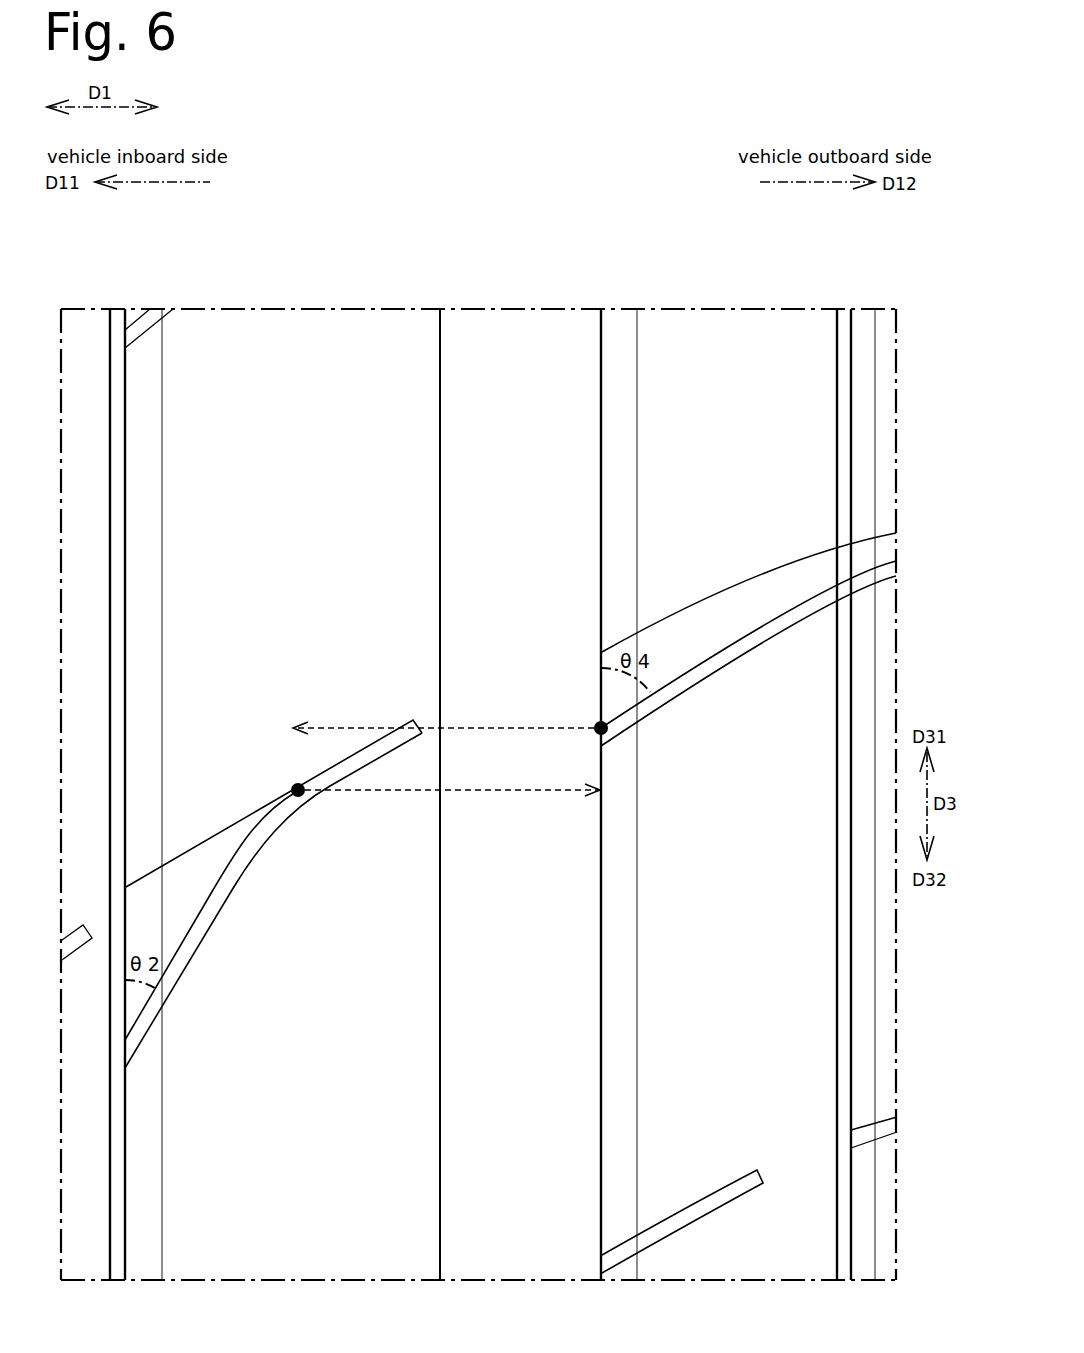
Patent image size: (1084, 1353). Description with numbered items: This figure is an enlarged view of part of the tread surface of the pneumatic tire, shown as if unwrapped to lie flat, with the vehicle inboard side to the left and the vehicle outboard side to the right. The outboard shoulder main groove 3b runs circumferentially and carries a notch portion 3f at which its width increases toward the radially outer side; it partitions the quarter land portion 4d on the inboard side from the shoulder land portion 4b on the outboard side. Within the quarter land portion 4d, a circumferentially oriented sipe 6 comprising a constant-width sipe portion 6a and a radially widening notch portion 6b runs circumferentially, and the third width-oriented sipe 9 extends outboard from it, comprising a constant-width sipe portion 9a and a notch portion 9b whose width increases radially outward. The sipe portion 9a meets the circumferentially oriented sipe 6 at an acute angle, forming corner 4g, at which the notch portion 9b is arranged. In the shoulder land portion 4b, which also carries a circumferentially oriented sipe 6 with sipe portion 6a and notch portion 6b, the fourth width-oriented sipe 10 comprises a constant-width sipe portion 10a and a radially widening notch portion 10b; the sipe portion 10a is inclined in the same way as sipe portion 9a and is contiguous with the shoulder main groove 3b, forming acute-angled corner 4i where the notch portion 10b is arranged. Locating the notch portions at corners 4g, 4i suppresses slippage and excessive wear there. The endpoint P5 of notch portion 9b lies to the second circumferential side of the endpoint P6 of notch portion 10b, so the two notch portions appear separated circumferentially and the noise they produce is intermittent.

The shoulder main groove 3b is at (527, 330).
The notch portion 3f is at (615, 385).
The shoulder land portion 4b is at (737, 318).
The quarter land portion 4d is at (288, 318).
The corner 4g is at (123, 1000).
The corner 4i is at (600, 690).
The circumferentially oriented sipe 6 is at (492, 794).
The sipe portion 6a is at (126, 528).
The notch portion 6b is at (145, 455).
The third width-oriented sipe 9 is at (273, 887).
The sipe portion 9a is at (243, 870).
The notch portion 9b is at (160, 937).
The fourth width-oriented sipe 10 is at (748, 645).
The sipe portion 10a is at (652, 712).
The notch portion 10b is at (732, 610).
The endpoint P5 is at (284, 785).
The endpoint P6 is at (588, 717).